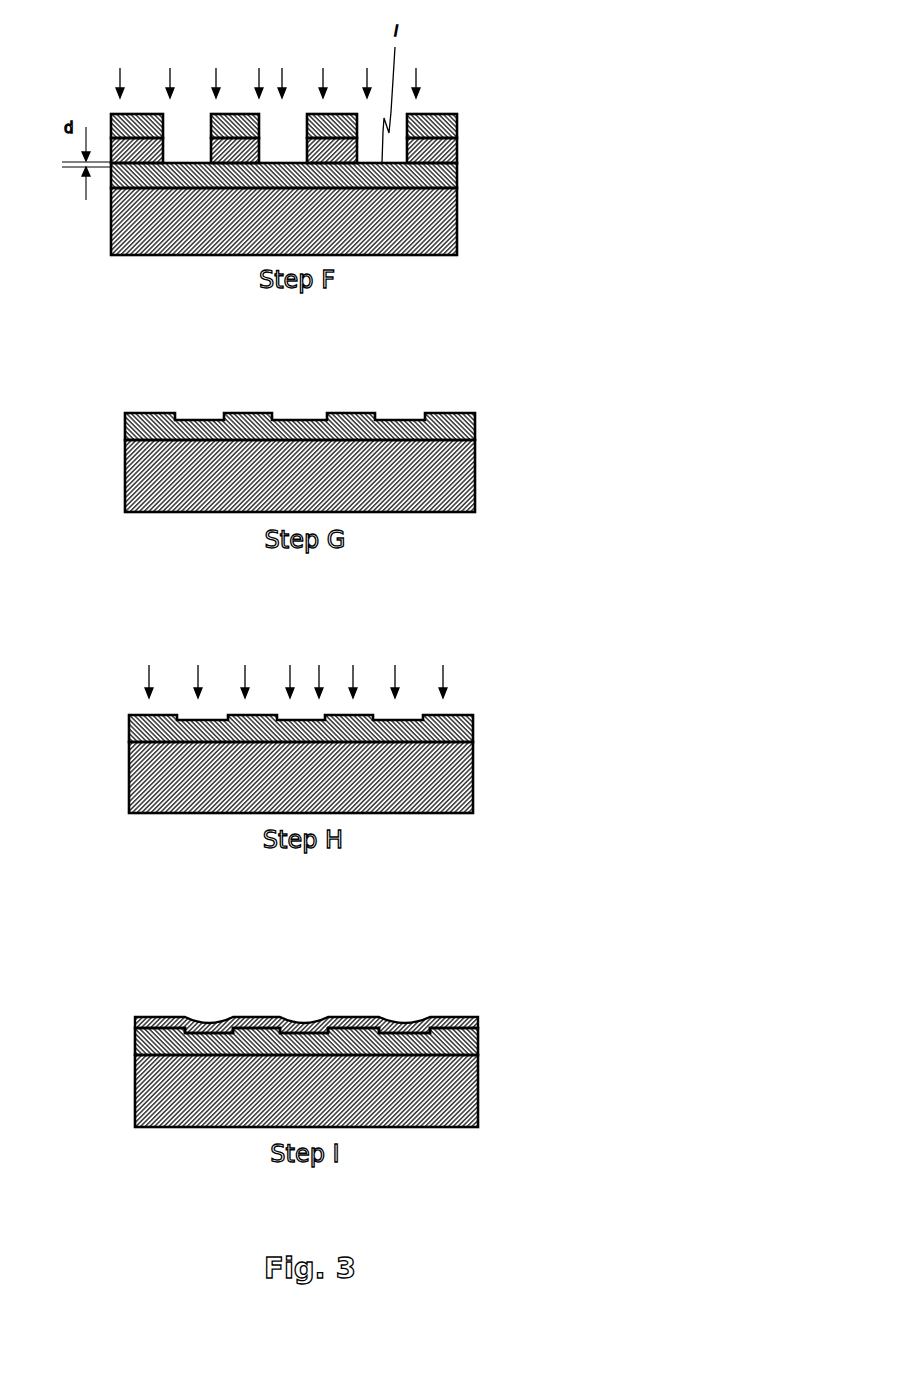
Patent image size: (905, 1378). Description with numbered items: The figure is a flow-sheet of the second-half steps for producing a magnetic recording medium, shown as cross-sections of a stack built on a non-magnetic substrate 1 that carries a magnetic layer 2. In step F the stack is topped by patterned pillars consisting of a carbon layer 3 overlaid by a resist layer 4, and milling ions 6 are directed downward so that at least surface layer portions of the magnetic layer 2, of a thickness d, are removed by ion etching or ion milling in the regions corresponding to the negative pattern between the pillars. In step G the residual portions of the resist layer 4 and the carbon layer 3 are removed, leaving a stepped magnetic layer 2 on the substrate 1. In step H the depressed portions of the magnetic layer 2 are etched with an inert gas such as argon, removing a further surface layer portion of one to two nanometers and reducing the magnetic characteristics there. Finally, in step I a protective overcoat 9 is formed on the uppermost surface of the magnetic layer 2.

The non-magnetic substrate 1 is at (457, 222).
The magnetic layer 2 is at (457, 175).
The carbon layer 3 is at (457, 150).
The resist layer 4 is at (457, 123).
The milling ion 6 is at (416, 71).
The protective overcoat 9 is at (478, 1020).